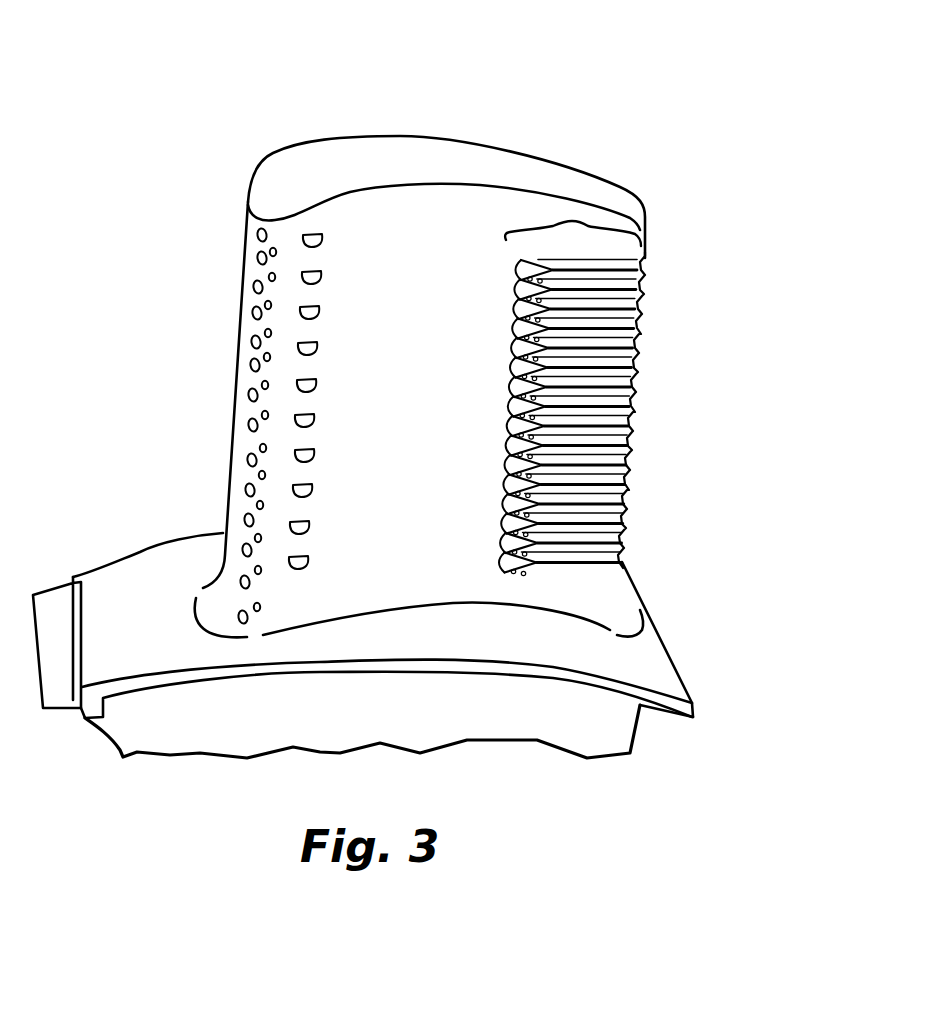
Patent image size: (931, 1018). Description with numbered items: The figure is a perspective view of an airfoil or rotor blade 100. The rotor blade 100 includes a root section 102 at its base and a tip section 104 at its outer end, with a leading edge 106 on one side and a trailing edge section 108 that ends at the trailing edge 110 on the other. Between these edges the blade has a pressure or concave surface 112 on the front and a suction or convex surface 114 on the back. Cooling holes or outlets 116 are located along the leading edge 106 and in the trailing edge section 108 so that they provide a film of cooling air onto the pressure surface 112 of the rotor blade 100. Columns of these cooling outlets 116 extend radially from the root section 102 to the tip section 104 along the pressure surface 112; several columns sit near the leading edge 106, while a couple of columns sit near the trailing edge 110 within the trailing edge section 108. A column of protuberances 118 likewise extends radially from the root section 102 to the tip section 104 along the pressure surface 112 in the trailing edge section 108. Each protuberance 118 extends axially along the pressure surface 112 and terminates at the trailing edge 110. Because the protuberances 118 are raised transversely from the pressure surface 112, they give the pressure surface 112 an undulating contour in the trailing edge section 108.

The rotor blade 100 is at (148, 86).
The root section 102 is at (593, 590).
The tip section 104 is at (270, 196).
The leading edge 106 is at (240, 413).
The trailing edge section 108 is at (570, 220).
The trailing edge 110 is at (636, 378).
The pressure surface 112 is at (395, 465).
The suction surface 114 is at (414, 130).
The cooling outlets 116 is at (310, 345).
The protuberances 118 is at (640, 303).